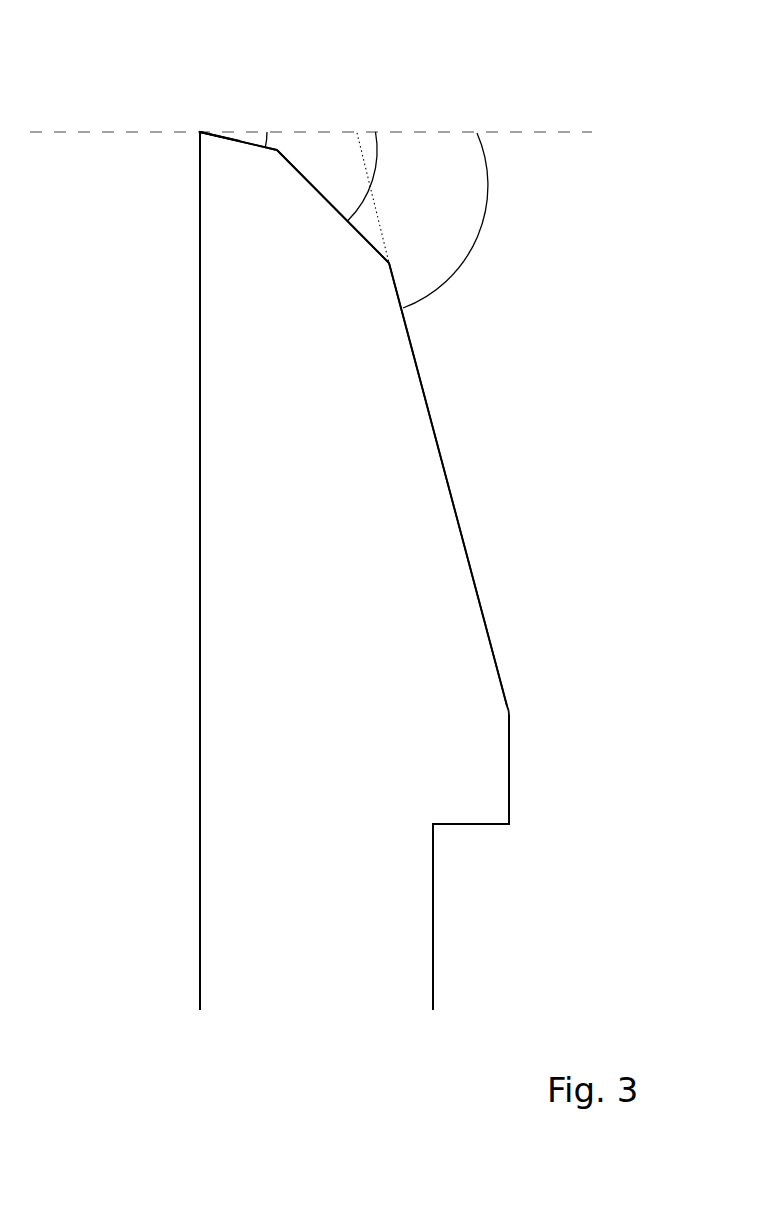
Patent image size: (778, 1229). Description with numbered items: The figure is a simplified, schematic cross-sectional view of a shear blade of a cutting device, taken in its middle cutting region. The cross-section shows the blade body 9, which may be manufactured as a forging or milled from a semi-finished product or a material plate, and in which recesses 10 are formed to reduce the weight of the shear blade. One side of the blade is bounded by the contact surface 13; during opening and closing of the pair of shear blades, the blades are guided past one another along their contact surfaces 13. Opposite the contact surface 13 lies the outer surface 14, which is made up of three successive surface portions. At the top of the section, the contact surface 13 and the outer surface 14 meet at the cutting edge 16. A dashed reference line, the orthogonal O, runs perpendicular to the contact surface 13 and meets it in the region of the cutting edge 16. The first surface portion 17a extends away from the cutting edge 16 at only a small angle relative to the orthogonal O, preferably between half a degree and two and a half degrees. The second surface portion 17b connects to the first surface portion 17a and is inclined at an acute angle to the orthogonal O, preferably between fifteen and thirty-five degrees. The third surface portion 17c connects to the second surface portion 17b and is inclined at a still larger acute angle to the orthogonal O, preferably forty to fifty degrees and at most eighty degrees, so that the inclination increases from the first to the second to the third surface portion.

The blade body 9 is at (250, 568).
The recesses 10 is at (462, 862).
The contact surface 13 is at (200, 403).
The outer surface 14 is at (522, 323).
The cutting edge 16 is at (200, 132).
The first surface portion 17a is at (226, 138).
The second surface portion 17b is at (322, 197).
The third surface portion 17c is at (445, 472).
The orthogonal O is at (331, 134).